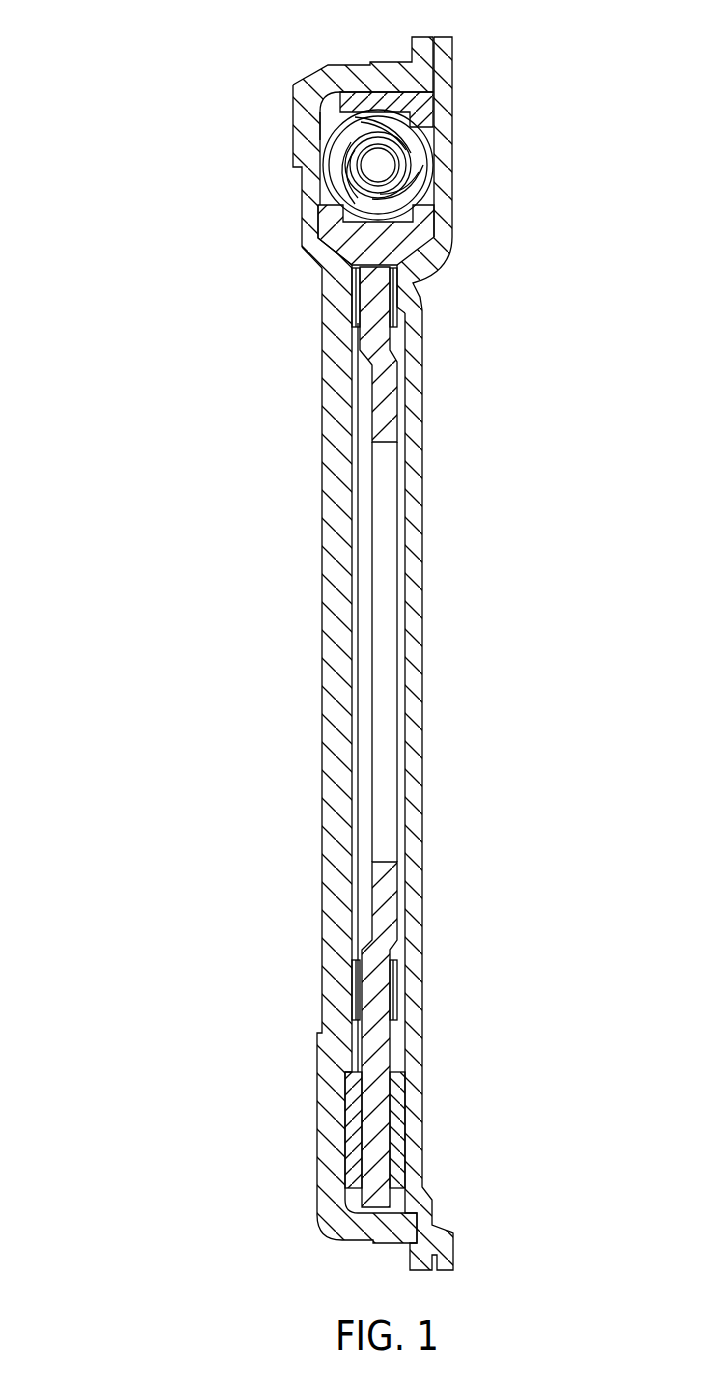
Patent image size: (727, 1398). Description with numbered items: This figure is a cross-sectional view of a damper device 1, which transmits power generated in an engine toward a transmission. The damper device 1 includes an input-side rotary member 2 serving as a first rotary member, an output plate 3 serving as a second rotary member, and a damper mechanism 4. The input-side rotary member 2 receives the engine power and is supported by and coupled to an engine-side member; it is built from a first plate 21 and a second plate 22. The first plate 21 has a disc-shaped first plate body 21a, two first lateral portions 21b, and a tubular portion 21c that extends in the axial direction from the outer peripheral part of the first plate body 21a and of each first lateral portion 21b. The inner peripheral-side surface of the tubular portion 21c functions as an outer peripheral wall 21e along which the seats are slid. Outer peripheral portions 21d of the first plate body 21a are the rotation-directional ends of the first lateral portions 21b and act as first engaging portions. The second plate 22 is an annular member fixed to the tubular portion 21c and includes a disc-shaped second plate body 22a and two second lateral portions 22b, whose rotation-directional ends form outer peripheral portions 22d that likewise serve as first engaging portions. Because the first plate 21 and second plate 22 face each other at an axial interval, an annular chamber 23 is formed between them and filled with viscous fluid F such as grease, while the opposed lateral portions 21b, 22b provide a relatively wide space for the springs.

The damper device 1 is at (133, 267).
The input-side rotary member 2 is at (283, 170).
The output plate 3 is at (400, 405).
The damper mechanism 4 is at (378, 88).
The first plate 21 is at (307, 76).
The first plate body 21a is at (333, 357).
The first lateral portions 21b is at (316, 222).
The tubular portion 21c is at (338, 64).
The outer peripheral portions 21d is at (303, 250).
The outer peripheral wall 21e is at (322, 112).
The second plate 22 is at (452, 70).
The second plate body 22a is at (422, 314).
The second lateral portions 22b is at (453, 167).
The outer peripheral portions 22d is at (417, 228).
The annular chamber 23 is at (430, 148).
The viscous fluid F is at (320, 112).